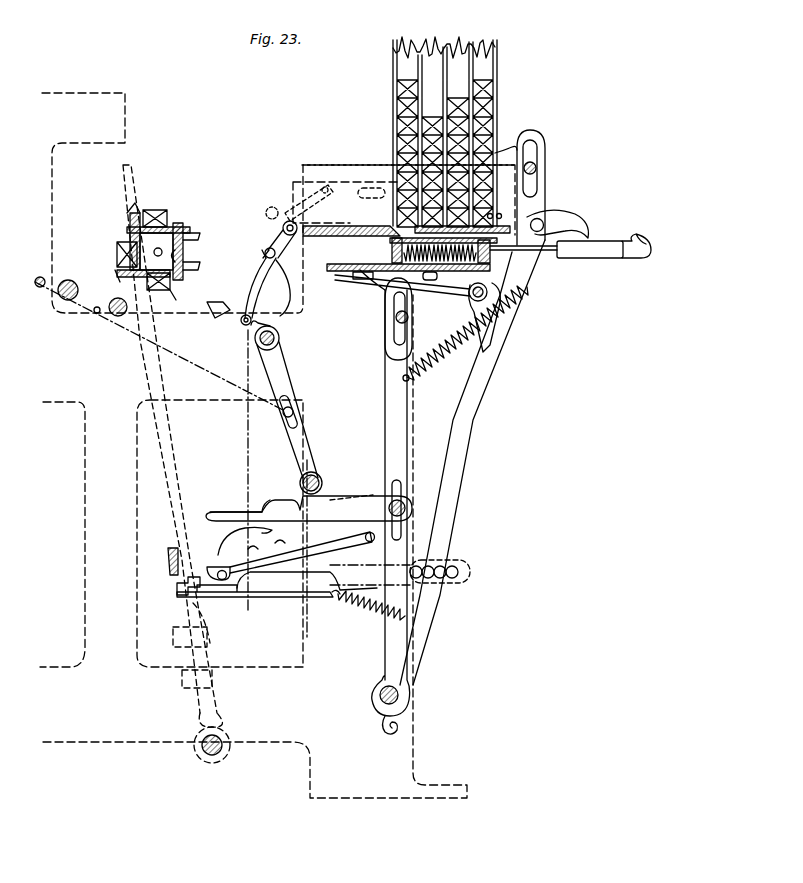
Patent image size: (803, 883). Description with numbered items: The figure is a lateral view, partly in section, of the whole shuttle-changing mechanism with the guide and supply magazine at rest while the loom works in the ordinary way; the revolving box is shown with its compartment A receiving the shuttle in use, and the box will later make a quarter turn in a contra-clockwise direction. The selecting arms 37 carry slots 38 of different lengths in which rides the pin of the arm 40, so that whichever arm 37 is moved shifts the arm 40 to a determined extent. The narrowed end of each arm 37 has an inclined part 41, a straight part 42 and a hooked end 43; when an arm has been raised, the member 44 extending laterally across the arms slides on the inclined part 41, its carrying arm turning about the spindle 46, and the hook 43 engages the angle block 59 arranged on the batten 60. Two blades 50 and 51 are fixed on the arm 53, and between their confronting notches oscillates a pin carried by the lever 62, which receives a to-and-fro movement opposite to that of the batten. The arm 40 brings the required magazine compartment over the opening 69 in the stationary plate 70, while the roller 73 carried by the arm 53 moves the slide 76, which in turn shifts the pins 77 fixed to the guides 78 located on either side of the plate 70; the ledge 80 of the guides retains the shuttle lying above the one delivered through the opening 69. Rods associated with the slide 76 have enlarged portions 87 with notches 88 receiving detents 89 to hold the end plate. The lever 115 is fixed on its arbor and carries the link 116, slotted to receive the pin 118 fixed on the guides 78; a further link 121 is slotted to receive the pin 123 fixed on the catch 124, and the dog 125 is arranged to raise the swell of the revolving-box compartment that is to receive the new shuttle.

The arm 37 is at (458, 563).
The slot 38 is at (448, 582).
The arm 40 is at (472, 462).
The inclined part 41 is at (250, 582).
The straight part 42 is at (220, 592).
The hooked end 43 is at (183, 584).
The member 44 is at (228, 570).
The spindle 46 is at (369, 542).
The blade 50 is at (240, 498).
The blade 51 is at (338, 497).
The arm 53 is at (391, 512).
The angle block 59 is at (162, 561).
The batten 60 is at (175, 457).
The lever 62 is at (281, 362).
The opening 69 is at (390, 238).
The plate 70 is at (330, 238).
The roller 73 is at (386, 316).
The slide 76 is at (478, 224).
The pin 77 is at (494, 257).
The guide 78 is at (323, 216).
The ledge 80 is at (371, 199).
The enlarged portion 87 is at (593, 258).
The notch 88 is at (623, 243).
The detent 89 is at (573, 226).
The lever 115 is at (282, 226).
The link 116 is at (292, 208).
The pin 118 is at (313, 187).
The link 121 is at (256, 277).
The pin 123 is at (243, 323).
The catch 124 is at (213, 311).
The dog 125 is at (288, 288).
The compartment A1 A is at (154, 248).